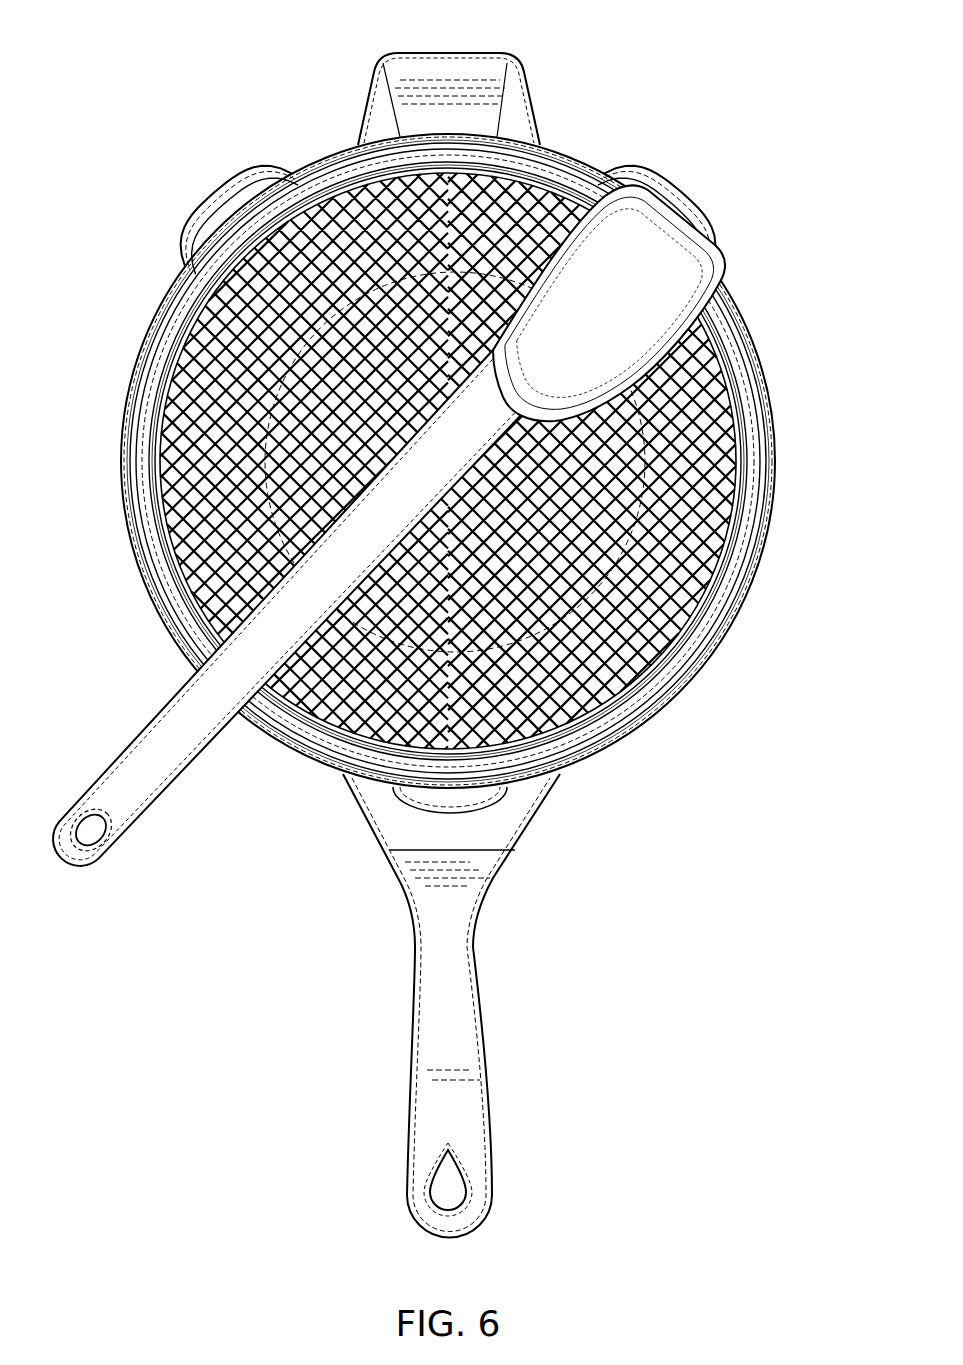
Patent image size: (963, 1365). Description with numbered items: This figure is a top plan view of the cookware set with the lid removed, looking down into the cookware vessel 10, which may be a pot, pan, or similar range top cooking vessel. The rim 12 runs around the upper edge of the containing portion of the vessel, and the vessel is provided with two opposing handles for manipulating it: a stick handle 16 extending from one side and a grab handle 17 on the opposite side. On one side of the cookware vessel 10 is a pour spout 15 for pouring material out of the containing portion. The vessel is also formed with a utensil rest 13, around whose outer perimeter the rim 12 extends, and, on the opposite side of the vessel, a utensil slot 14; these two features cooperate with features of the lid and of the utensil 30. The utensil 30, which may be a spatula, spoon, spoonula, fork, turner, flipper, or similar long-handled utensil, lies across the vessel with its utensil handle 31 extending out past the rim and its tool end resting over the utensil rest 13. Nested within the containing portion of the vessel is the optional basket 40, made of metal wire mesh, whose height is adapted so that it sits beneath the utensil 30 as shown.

The cookware vessel 10 is at (673, 708).
The rim 12 is at (123, 420).
The utensil rest 13 is at (742, 265).
The utensil slot 14 is at (240, 717).
The pour spout 15 is at (232, 222).
The stick handle 16 is at (465, 1047).
The grab handle 17 is at (494, 70).
The utensil 30 is at (389, 554).
The utensil handle 31 is at (147, 797).
The basket 40 is at (718, 477).